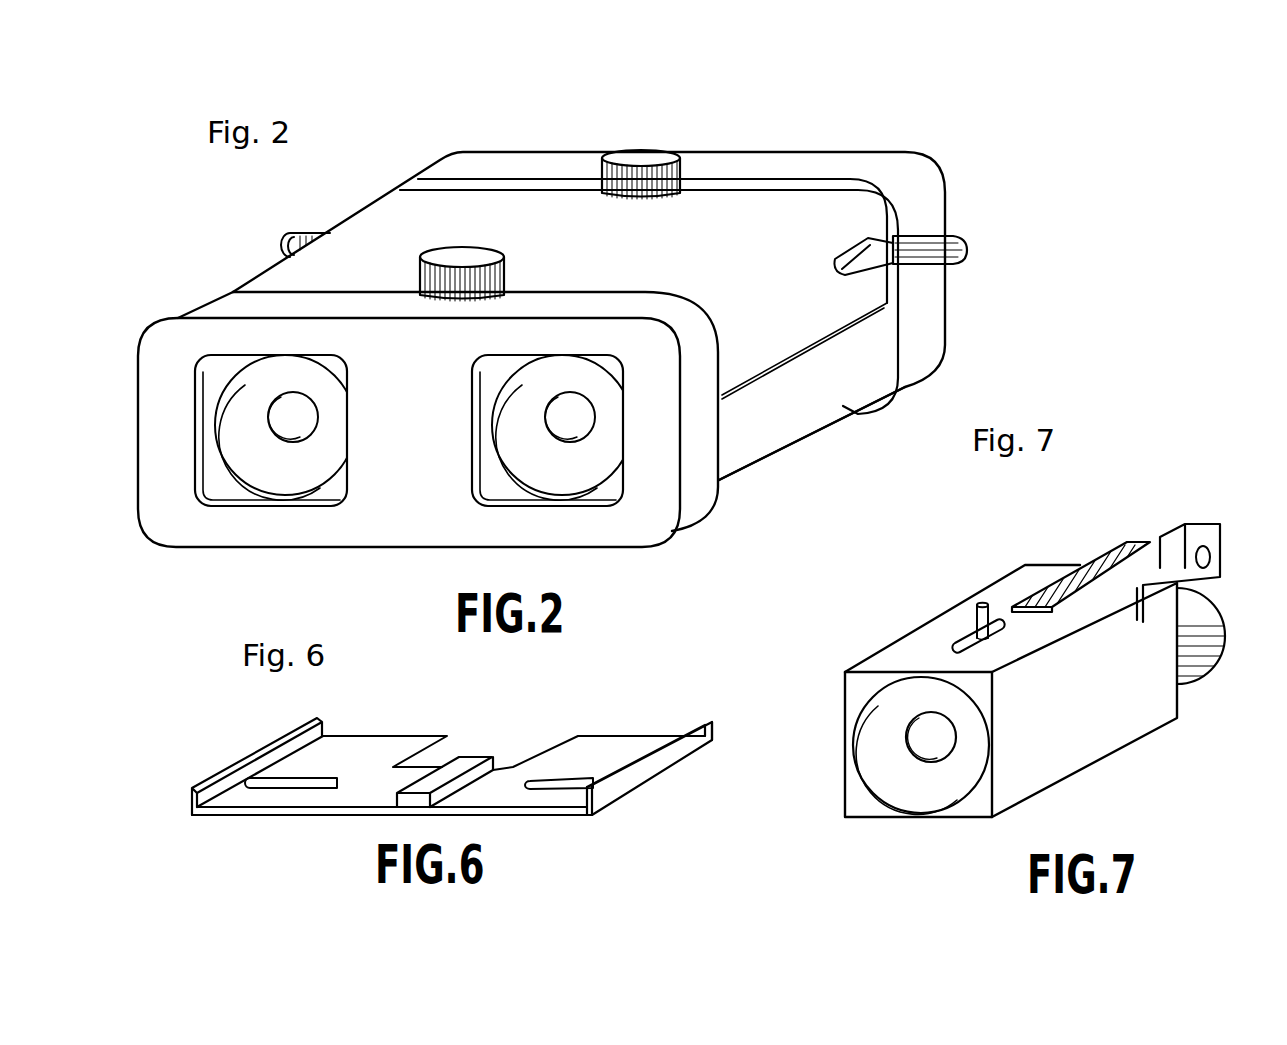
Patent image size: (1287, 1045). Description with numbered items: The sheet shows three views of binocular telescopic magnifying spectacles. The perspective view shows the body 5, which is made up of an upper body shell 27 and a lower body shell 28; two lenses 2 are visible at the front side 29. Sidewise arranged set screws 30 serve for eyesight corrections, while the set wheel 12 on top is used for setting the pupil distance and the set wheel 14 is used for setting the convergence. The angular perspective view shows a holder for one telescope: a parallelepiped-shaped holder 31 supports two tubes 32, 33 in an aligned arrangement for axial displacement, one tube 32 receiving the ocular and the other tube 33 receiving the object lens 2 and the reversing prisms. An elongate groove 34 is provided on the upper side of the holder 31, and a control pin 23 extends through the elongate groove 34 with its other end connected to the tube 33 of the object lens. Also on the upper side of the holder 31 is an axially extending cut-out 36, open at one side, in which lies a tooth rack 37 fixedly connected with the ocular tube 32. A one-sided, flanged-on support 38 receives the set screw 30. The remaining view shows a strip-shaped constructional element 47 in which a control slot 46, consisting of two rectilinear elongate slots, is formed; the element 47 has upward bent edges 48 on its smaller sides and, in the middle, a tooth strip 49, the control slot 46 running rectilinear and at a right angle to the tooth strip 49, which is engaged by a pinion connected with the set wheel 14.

In FIG. 2, the lens 2 is at (293, 425).
In FIG. 7, the lens 2 is at (932, 742).
In FIG. 2, the body 5 is at (856, 148).
In FIG. 2, the set wheel 12 is at (634, 157).
In FIG. 2, the set wheel 14 is at (445, 253).
In FIG. 2, the upper body shell 27 is at (680, 266).
In FIG. 2, the lower body shell 28 is at (802, 418).
In FIG. 2, the front side 29 is at (420, 523).
In FIG. 2, the set screw 30 is at (282, 245).
In FIG. 7, the holder 31 is at (1043, 762).
In FIG. 7, the tube 32 is at (1205, 640).
In FIG. 7, the tube 33 is at (947, 783).
In FIG. 7, the elongate groove 34 is at (963, 647).
In FIG. 7, the cut-out 36 is at (1033, 605).
In FIG. 7, the tooth rack 37 is at (1113, 548).
In FIG. 7, the support 38 is at (1190, 535).
In FIG. 7, the control pin 23 is at (980, 613).
In FIG. 6, the control slot 46 is at (297, 785).
In FIG. 6, the strip-shaped constructional element 47 is at (638, 791).
In FIG. 6, the upward bent edge 48 is at (247, 760).
In FIG. 6, the tooth strip 49 is at (463, 763).